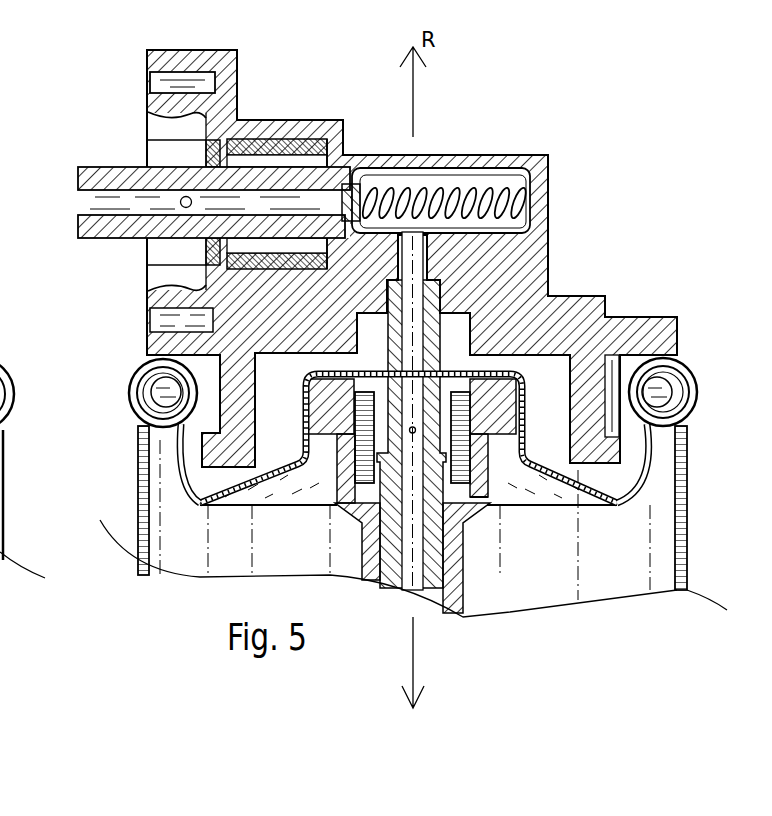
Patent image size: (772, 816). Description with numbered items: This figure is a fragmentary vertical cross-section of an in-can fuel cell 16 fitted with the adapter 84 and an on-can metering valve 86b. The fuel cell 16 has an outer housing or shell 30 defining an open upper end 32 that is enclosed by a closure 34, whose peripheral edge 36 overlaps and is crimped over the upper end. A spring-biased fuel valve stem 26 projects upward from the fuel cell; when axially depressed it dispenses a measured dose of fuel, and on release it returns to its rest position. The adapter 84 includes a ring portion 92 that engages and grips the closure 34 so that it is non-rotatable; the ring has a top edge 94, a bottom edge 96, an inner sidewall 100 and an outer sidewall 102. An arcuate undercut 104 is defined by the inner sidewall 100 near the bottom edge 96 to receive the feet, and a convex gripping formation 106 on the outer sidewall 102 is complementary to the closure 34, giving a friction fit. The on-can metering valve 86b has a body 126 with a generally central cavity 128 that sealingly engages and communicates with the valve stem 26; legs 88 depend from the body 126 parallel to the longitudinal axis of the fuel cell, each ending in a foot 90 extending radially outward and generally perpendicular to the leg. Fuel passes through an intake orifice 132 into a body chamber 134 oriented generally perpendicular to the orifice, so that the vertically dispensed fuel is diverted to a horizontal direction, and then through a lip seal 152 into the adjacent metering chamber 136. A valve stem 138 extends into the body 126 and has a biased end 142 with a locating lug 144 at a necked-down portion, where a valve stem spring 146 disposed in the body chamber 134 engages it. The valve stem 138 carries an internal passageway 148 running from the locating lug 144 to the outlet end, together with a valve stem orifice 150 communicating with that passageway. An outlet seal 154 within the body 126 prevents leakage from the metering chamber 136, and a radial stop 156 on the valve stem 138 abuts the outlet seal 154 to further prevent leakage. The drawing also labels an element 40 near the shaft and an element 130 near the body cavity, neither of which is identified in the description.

The fuel cell 16 is at (626, 636).
The fuel valve stem 26 is at (395, 578).
The outer housing or shell 30 is at (5, 553).
The open upper end 32 is at (14, 404).
The closure 34 is at (704, 342).
The peripheral edge 36 is at (2, 355).
The shaft 40 is at (175, 198).
The adapter 84 is at (5, 507).
The on-can metering valve 86b is at (578, 246).
The leg portion 88 is at (147, 385).
The foot 90 is at (200, 447).
The ring portion 92 is at (3, 315).
The top edge 94 is at (233, 403).
The bottom edge 96 is at (197, 504).
The inner sidewall 100 is at (575, 463).
The outer sidewall 102 is at (5, 395).
The arcuate undercut 104 is at (618, 503).
The convex gripping formation 106 is at (165, 455).
The body 126 is at (268, 308).
The cavity 128 is at (363, 523).
The rod 130 is at (445, 268).
The intake orifice 132 is at (547, 220).
The body chamber 134 is at (503, 172).
The metering chamber 136 is at (263, 143).
The valve stem 138 is at (95, 143).
The biased end 142 is at (347, 120).
The locating lug 144 is at (358, 185).
The valve stem spring 146 is at (480, 187).
The internal passageway 148 is at (96, 203).
The valve stem orifice 150 is at (184, 196).
The lip seal 152 is at (325, 157).
The outlet seal 154 is at (205, 150).
The radial stop 156 is at (234, 100).